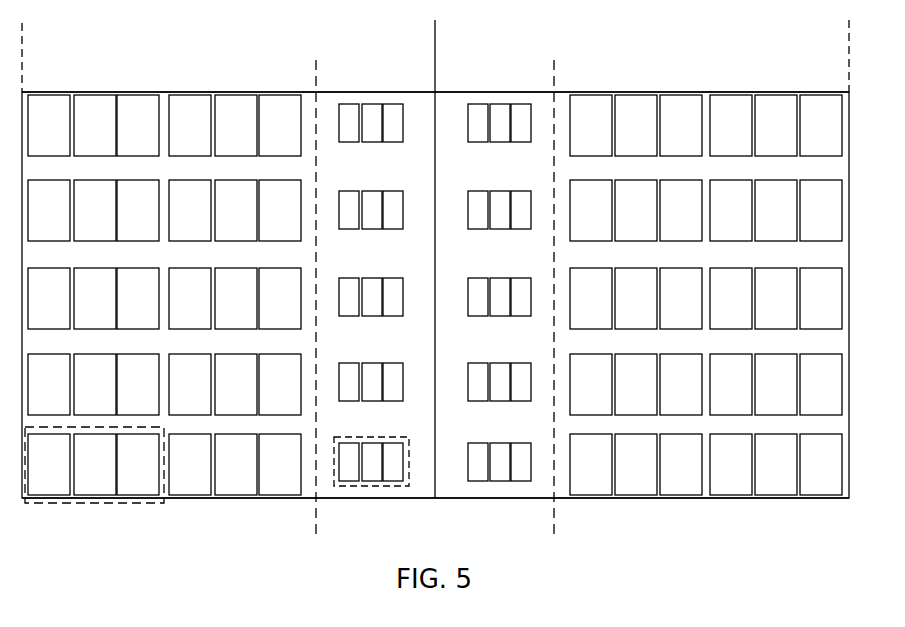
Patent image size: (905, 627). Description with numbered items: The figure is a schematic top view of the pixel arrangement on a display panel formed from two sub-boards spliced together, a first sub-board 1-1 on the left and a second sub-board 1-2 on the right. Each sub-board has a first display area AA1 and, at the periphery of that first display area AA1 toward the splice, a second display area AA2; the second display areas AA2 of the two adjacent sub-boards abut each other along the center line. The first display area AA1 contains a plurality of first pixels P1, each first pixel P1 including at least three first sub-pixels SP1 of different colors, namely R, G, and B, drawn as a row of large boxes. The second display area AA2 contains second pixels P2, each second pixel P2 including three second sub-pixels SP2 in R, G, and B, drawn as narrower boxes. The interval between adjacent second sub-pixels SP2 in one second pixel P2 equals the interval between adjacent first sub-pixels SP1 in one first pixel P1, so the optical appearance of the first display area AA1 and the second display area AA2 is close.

The first sub-board 1-1 is at (435, 52).
The second sub-board 1-2 is at (435, 52).
The first display area AA1 is at (22, 80).
The second display area AA2 is at (554, 80).
The first sub-pixel SP1 is at (42, 481).
The first pixel P1 is at (153, 502).
The second sub-pixel SP2 is at (345, 472).
The second pixel P2 is at (387, 485).